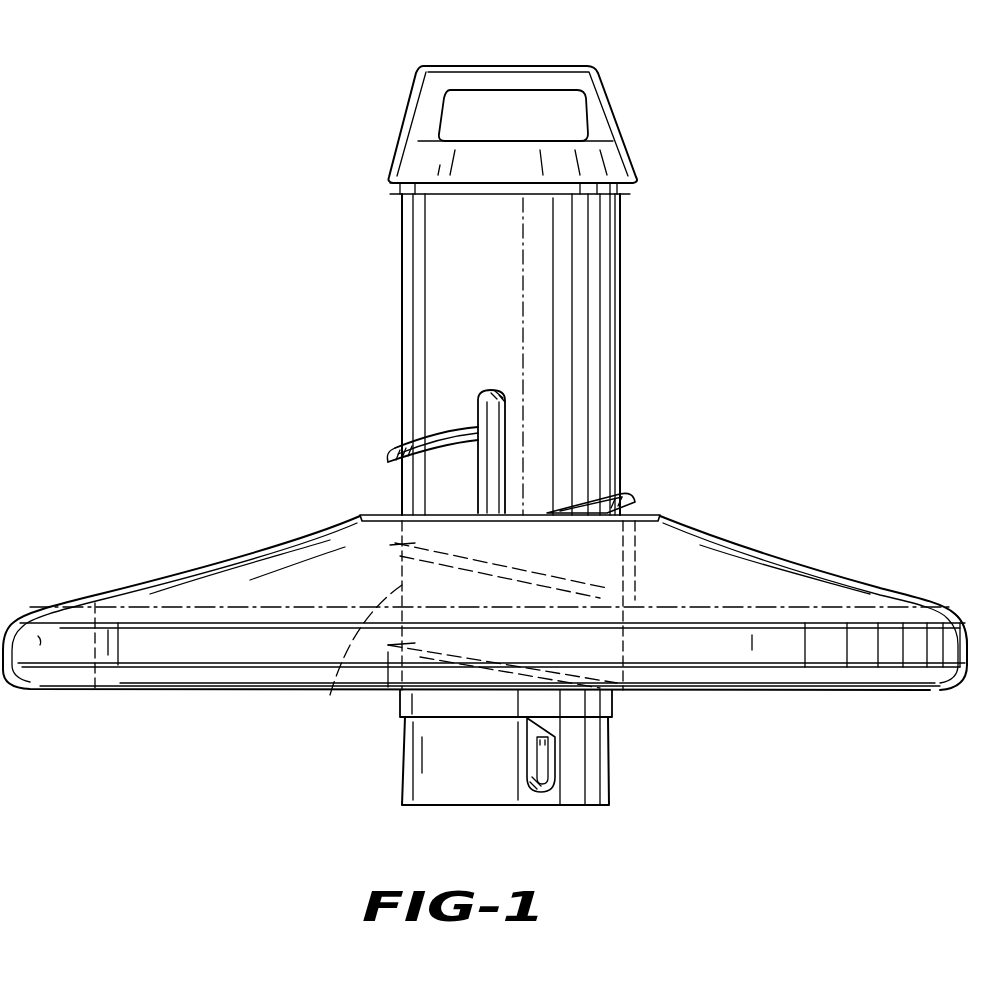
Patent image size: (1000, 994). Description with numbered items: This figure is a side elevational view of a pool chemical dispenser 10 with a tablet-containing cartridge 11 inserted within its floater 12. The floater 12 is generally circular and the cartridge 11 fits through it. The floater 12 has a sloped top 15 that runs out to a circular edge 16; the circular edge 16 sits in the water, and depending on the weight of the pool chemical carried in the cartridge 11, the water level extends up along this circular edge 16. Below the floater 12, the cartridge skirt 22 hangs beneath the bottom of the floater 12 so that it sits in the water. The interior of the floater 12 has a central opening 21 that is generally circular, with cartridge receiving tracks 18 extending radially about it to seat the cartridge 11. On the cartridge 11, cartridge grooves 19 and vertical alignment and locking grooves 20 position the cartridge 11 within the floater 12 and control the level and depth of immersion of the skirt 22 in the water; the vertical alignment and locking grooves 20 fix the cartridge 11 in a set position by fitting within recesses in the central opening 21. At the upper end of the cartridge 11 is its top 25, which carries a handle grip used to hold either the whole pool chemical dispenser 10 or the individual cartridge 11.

The pool chemical dispenser 10 is at (767, 233).
The cartridge 11 is at (622, 270).
The floater 12 is at (485, 630).
The sloped top 15 is at (384, 580).
The circular edge 16 is at (970, 637).
The cartridge receiving tracks 18 is at (668, 533).
The cartridge grooves 19 is at (388, 455).
The vertical alignment and locking grooves 20 is at (486, 392).
The central opening 21 is at (335, 690).
The cartridge skirt 22 is at (610, 748).
The top 25 is at (593, 85).